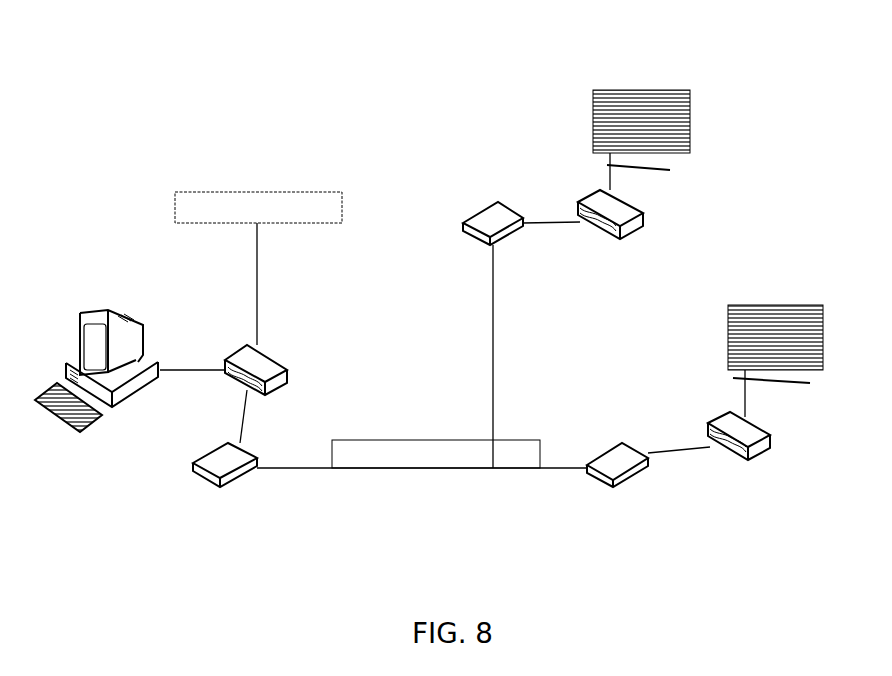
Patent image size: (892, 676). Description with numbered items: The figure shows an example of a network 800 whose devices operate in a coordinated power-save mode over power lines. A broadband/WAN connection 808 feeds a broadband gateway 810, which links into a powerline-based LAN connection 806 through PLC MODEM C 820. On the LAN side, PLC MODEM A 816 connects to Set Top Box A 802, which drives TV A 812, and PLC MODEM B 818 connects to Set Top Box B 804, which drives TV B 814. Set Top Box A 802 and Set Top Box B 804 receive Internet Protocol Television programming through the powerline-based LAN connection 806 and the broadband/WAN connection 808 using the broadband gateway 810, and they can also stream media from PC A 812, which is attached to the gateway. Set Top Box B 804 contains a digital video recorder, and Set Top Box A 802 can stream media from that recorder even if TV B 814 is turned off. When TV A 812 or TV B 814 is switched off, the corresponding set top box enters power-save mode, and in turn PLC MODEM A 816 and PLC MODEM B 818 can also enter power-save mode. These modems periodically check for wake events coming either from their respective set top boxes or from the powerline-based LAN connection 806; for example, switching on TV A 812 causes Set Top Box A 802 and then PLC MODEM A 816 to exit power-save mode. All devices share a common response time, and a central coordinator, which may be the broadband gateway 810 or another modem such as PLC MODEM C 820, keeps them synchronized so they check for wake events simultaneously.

The network 800 is at (143, 86).
The Set Top Box A 802 is at (643, 223).
The Set Top Box B 804 is at (720, 417).
The powerline-based LAN connection 806 is at (415, 440).
The broadband/WAN connection 808 is at (237, 191).
The broadband gateway 810 is at (233, 350).
The PC A / TV A 812 is at (80, 313).
The TV B 814 is at (731, 302).
The PLC MODEM A 816 is at (503, 240).
The PLC MODEM B 818 is at (602, 453).
The PLC MODEM C 820 is at (205, 453).